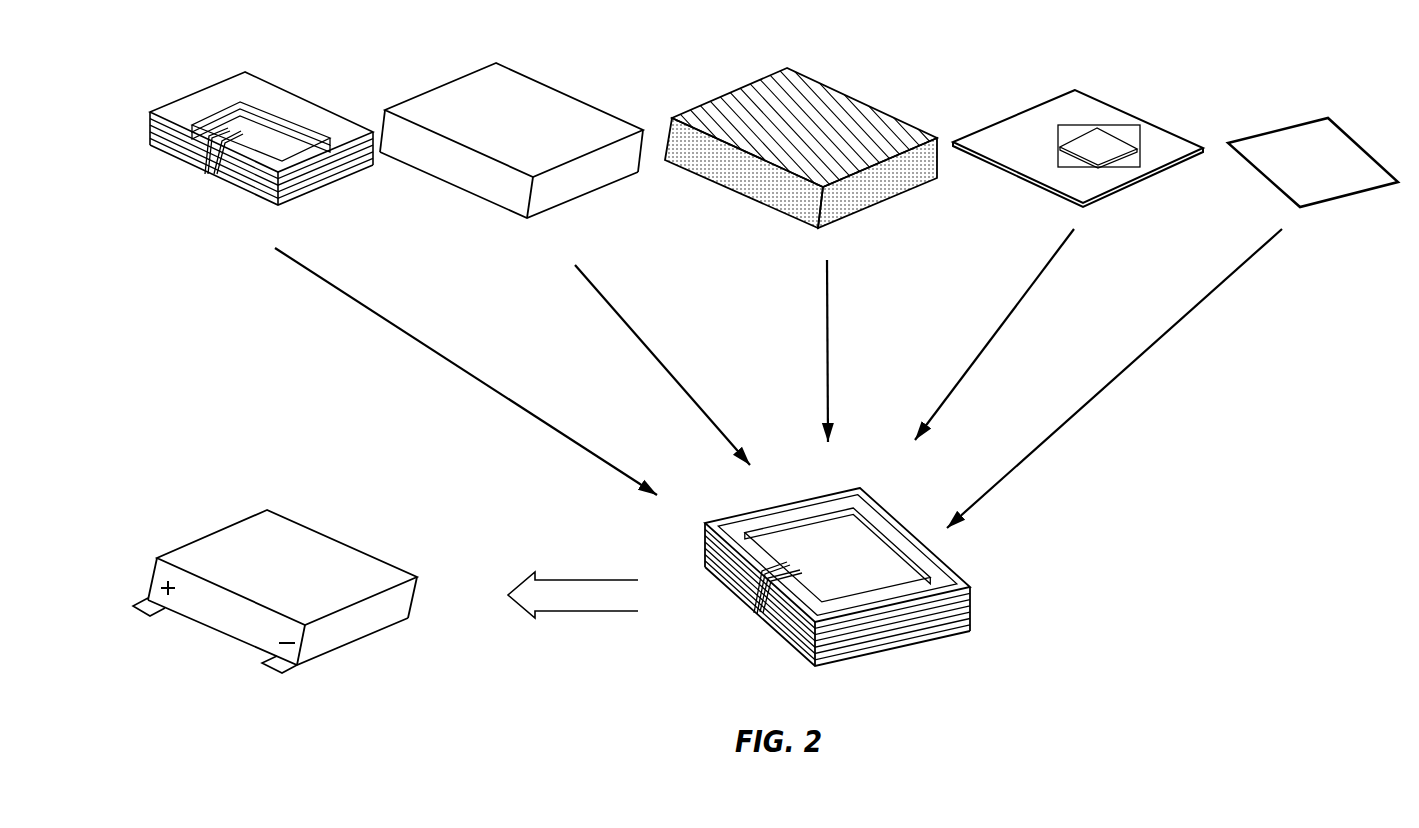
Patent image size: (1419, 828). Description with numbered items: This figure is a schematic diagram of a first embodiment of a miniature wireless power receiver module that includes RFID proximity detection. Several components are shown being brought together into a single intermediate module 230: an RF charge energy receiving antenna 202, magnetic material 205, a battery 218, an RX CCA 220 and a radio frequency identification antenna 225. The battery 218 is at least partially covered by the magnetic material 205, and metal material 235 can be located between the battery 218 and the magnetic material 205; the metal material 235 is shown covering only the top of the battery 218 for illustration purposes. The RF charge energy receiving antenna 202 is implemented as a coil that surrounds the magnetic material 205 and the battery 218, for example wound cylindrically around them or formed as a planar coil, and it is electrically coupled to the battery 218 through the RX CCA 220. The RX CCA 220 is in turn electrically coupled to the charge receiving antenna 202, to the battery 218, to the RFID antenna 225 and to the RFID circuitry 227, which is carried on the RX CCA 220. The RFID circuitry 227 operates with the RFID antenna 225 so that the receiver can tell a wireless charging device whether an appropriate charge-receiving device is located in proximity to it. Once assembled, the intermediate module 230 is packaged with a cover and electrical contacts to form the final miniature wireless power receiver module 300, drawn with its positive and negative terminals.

The RF charge energy receiving antenna 202 is at (268, 82).
The magnetic material 205 is at (513, 66).
The battery 218 is at (807, 139).
The metal material 235 is at (794, 80).
The RX CCA 220 is at (1078, 139).
The RFID circuitry 227 is at (1090, 125).
The RFID antenna 225 is at (1285, 127).
The intermediate module 230 is at (970, 612).
The miniature wireless power receiver module 300 is at (345, 651).